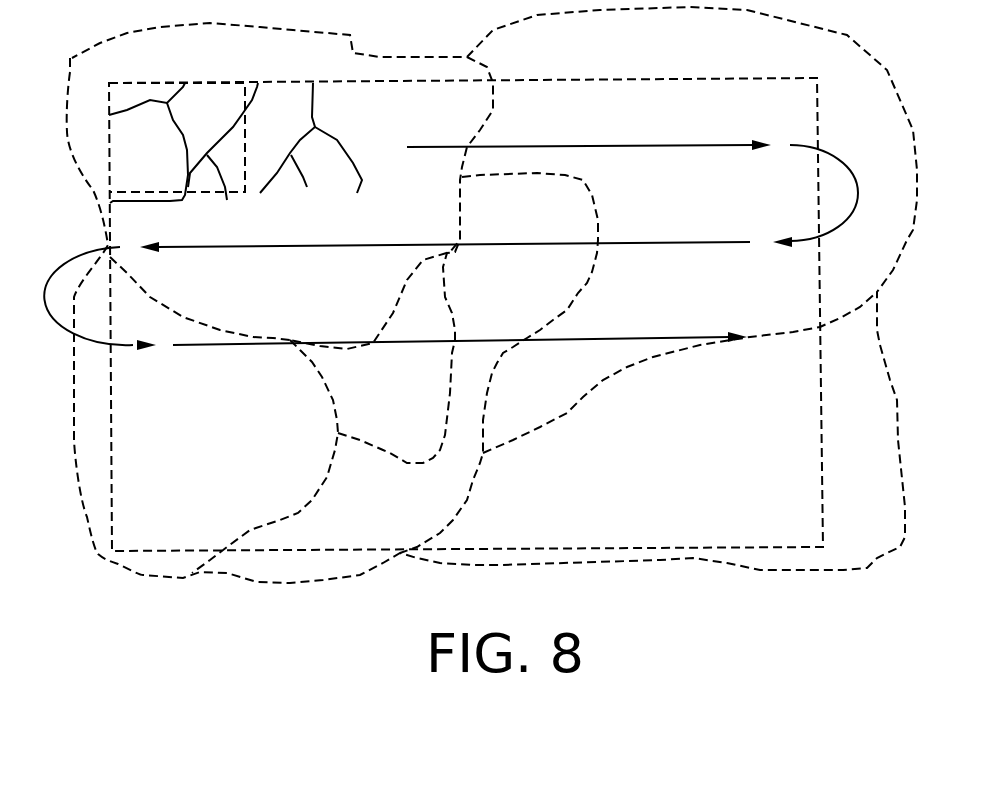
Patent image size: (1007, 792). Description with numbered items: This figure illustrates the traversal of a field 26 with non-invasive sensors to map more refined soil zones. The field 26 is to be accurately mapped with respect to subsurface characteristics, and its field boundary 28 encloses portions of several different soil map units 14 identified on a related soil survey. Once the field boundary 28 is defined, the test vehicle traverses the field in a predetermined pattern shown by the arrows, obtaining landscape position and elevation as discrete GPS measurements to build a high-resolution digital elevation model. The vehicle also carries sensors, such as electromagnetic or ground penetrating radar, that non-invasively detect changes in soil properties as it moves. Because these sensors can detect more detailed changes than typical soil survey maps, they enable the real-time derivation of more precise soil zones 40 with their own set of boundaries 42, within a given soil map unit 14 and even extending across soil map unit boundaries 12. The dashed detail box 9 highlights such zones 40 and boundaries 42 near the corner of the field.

The enlarged detail region 9 is at (245, 138).
The soil map unit boundaries 12 is at (462, 200).
The soil map unit 14 is at (276, 296).
The field 26 is at (385, 587).
The field boundary 28 is at (587, 547).
The soil zones 40 is at (132, 169).
The boundaries 42 is at (275, 159).